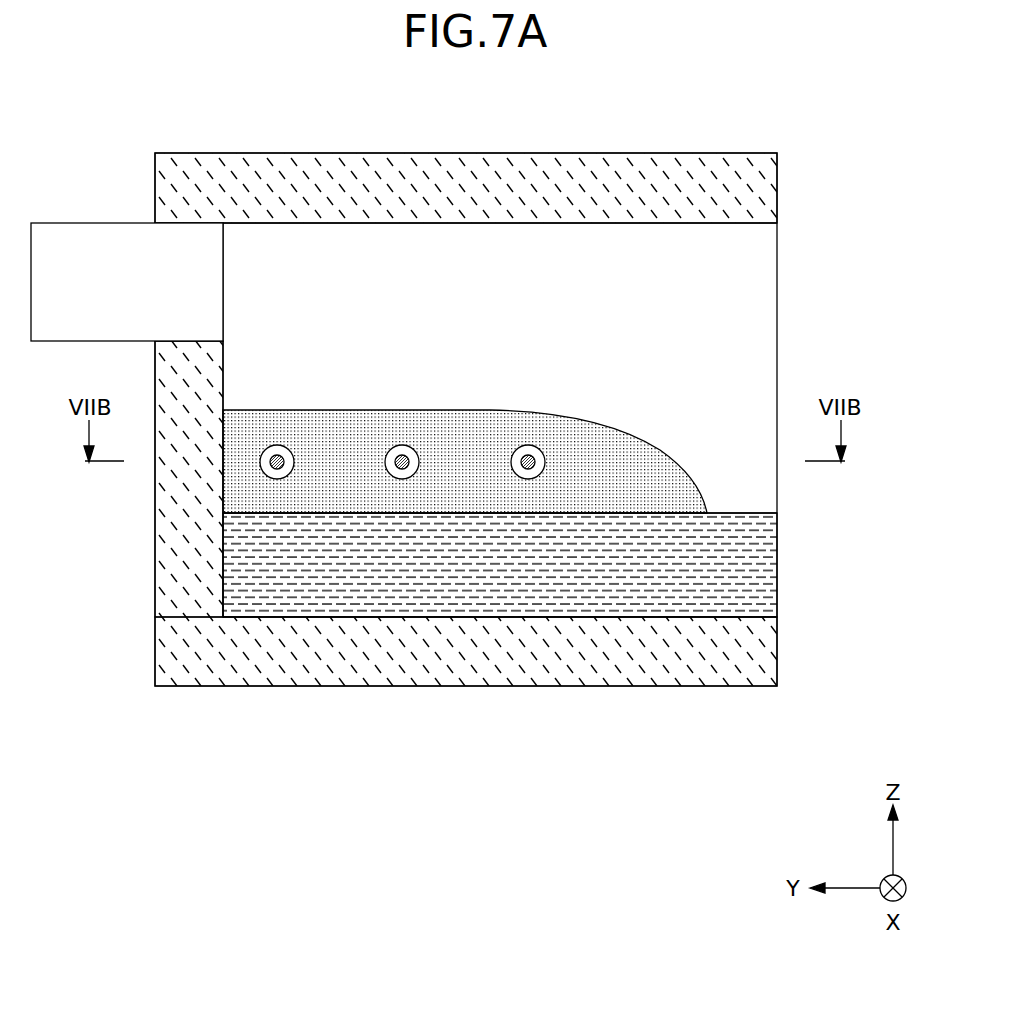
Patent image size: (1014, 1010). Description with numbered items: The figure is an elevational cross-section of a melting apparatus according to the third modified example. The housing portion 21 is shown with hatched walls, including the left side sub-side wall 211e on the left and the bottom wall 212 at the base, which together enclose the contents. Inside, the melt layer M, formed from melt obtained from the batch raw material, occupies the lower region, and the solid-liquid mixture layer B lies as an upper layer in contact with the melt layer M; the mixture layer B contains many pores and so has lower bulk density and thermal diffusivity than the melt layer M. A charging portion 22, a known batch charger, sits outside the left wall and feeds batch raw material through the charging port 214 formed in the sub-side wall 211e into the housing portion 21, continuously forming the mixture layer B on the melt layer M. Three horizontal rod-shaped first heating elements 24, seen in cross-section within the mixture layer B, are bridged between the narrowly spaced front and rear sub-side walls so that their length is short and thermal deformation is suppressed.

The housing portion 21 is at (402, 451).
The left side sub-side wall 211e is at (162, 565).
The bottom wall 212 is at (578, 672).
The charging port 214 is at (207, 273).
The charging portion 22 is at (93, 239).
The first heating element 24 is at (277, 445).
The solid-liquid mixture layer B is at (458, 444).
The melt layer M is at (655, 602).